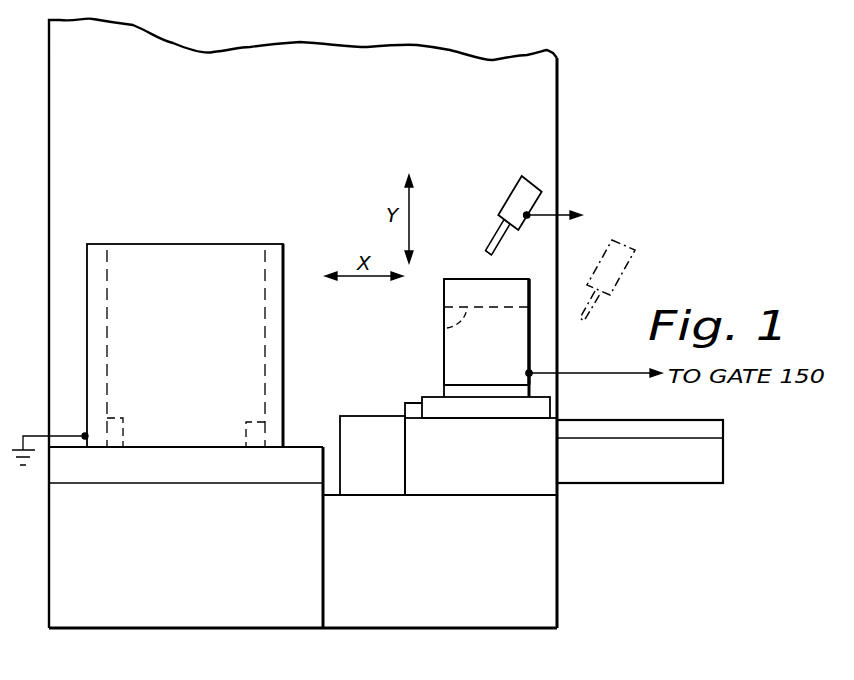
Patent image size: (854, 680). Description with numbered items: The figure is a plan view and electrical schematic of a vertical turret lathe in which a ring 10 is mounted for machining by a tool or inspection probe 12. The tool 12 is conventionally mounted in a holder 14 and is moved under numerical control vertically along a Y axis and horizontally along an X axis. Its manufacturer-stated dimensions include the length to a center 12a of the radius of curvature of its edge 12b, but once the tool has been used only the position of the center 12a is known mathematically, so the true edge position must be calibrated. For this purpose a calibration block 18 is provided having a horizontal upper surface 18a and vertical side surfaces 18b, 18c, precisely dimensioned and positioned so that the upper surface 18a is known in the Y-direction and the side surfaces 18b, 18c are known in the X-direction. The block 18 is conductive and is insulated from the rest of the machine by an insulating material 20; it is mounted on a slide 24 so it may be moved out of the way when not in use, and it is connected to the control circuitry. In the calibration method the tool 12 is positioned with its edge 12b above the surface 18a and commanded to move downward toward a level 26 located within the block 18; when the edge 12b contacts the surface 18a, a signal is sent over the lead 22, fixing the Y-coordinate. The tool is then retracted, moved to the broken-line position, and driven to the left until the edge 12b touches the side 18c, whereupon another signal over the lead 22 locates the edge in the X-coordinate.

The ring 10 is at (283, 268).
The tool or inspection probe 12 is at (494, 212).
The center of radius of curvature of tool edge 12a is at (500, 249).
The tool edge 12b is at (489, 254).
The holder 14 is at (512, 185).
The calibration block 18 is at (494, 336).
The horizontal upper surface 18a is at (460, 279).
The vertical side surface 18b is at (446, 356).
The vertical side surface 18c is at (531, 343).
The insulating material 20 is at (444, 387).
The lead 22 is at (550, 217).
The slide 24 is at (570, 403).
The level 26 is at (443, 327).